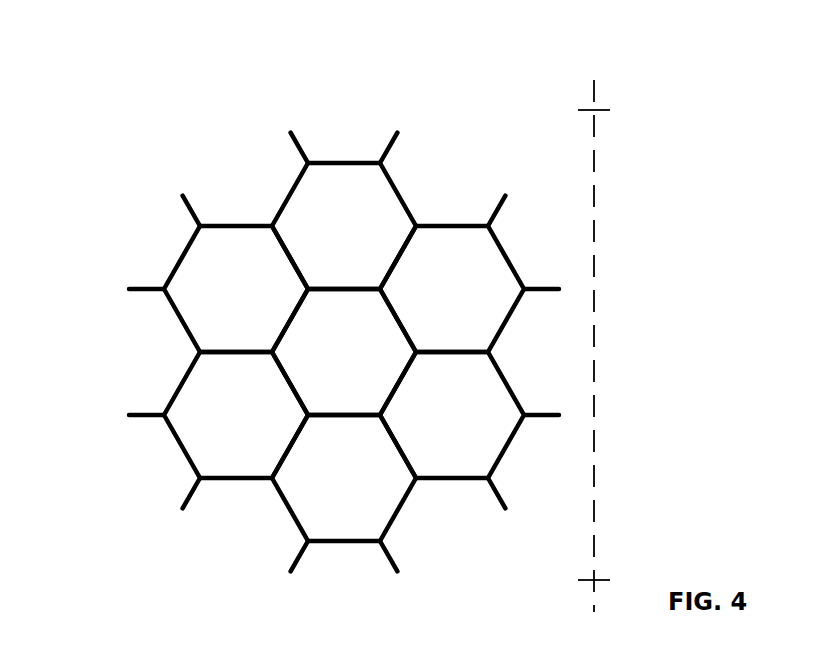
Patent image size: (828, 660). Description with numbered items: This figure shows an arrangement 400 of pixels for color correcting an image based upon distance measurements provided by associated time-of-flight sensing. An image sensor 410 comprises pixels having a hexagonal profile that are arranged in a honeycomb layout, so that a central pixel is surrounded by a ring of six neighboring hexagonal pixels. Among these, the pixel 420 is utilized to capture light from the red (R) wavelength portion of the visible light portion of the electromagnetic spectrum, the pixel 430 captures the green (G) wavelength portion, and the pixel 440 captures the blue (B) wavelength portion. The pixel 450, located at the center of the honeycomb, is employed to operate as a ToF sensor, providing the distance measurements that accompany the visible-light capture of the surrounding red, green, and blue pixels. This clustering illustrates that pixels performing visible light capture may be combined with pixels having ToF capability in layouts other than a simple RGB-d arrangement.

The hexagonal pixel array 400 is at (481, 97).
The image sensor 410 is at (594, 203).
The pixel 420 is at (303, 187).
The pixel 430 is at (190, 265).
The pixel 440 is at (197, 390).
The pixel 450 is at (316, 389).